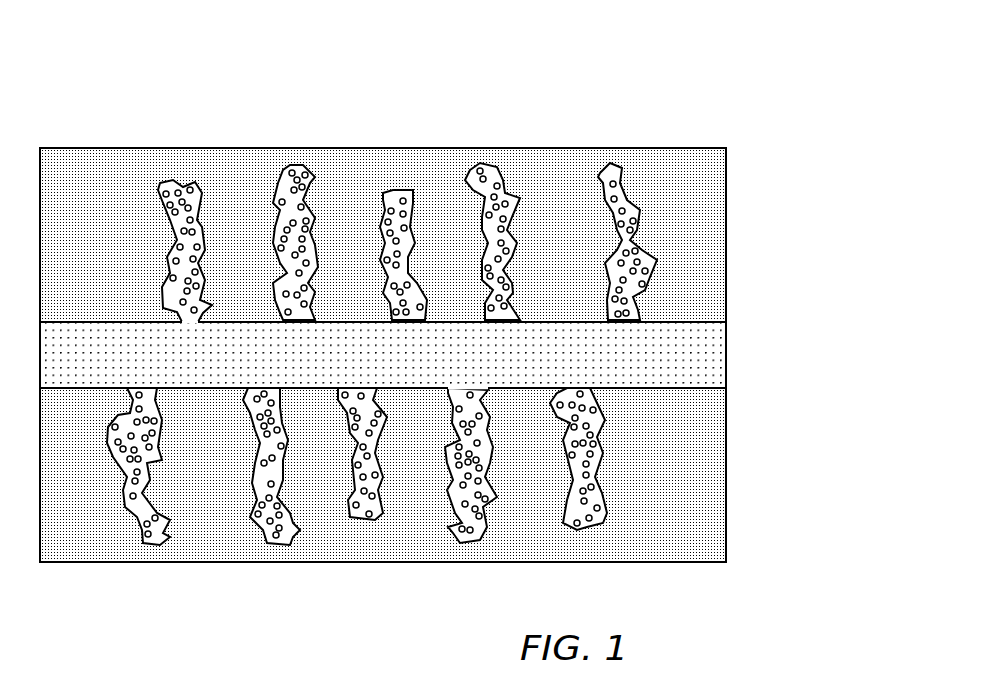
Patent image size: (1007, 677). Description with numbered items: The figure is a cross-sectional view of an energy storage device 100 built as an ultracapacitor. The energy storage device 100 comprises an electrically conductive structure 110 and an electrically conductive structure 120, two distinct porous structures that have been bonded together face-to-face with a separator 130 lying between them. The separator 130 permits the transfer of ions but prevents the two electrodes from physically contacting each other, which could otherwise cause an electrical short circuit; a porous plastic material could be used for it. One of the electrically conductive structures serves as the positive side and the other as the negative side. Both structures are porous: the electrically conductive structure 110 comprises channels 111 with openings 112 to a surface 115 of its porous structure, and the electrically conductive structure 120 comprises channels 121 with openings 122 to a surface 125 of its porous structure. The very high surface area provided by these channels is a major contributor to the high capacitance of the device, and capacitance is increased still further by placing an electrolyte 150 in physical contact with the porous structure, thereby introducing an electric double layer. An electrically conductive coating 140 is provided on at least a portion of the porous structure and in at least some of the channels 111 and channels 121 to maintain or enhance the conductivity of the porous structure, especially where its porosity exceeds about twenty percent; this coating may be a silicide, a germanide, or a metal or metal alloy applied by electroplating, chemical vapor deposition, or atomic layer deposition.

The energy storage device 100 is at (417, 335).
The electrically conductive structure 110 is at (108, 550).
The channels 111 is at (260, 533).
The openings 112 is at (468, 381).
The surface 115 is at (630, 394).
The electrically conductive structure 120 is at (118, 196).
The channels 121 is at (293, 167).
The openings 122 is at (189, 328).
The surface 125 is at (62, 318).
The separator 130 is at (704, 362).
The electrically conductive coating 140 is at (614, 200).
The electrolyte 150 is at (500, 148).